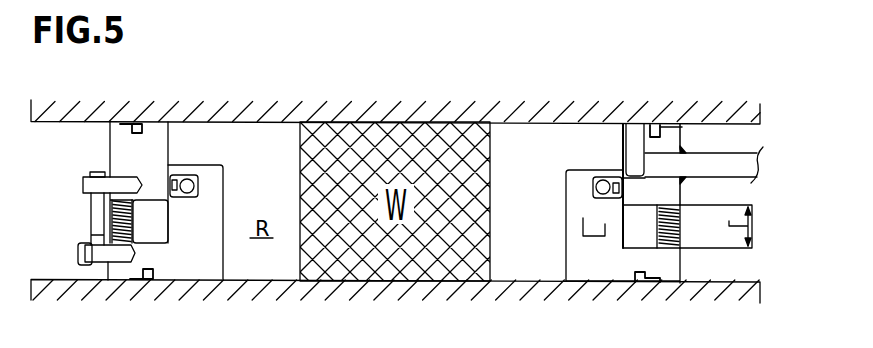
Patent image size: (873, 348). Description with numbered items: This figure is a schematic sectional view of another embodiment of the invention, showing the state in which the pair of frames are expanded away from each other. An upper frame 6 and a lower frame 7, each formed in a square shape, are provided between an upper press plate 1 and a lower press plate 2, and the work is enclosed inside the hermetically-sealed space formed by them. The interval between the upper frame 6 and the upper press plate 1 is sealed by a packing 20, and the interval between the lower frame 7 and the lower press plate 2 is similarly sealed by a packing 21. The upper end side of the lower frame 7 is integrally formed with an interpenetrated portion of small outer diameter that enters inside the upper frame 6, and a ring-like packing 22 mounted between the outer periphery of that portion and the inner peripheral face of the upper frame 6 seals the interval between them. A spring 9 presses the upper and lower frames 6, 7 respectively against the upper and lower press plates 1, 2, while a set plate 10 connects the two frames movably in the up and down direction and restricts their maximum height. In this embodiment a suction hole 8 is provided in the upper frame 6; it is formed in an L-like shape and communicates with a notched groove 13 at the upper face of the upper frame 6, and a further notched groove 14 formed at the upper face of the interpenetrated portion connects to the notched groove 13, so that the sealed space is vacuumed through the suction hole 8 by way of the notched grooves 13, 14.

The upper press plate 1 is at (413, 121).
The lower press plate 2 is at (398, 300).
The upper frame 6 is at (688, 125).
The lower frame 7 is at (598, 279).
The suction hole 8 is at (623, 125).
The spring 9 is at (675, 230).
The set plate 10 is at (98, 215).
The notched groove 13 is at (628, 124).
The notched groove 14 is at (567, 169).
The packing 20 is at (673, 124).
The packing 21 is at (645, 283).
The packing 22 is at (600, 180).